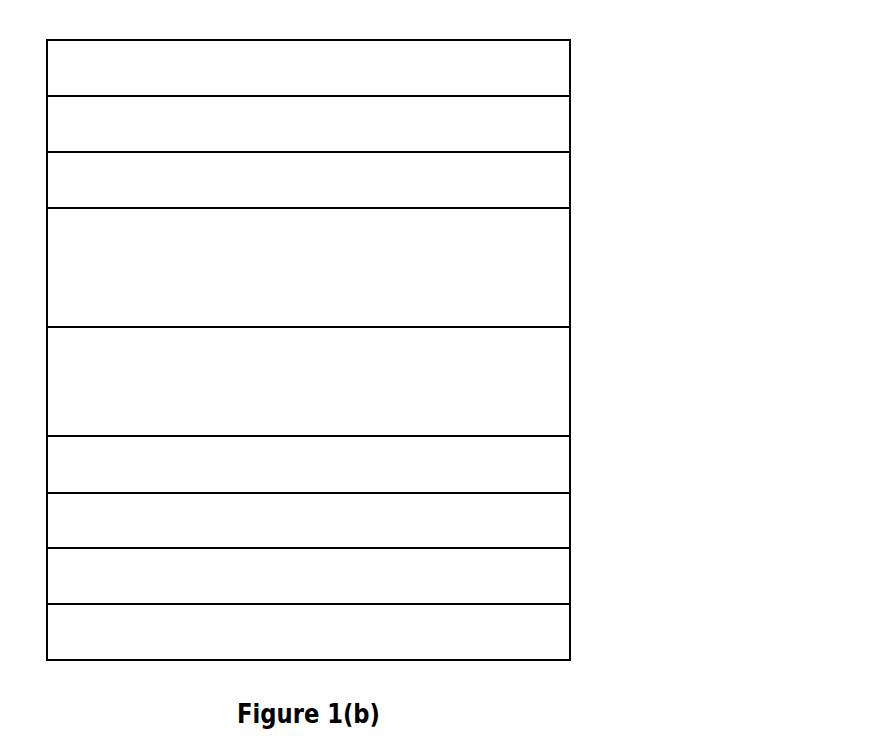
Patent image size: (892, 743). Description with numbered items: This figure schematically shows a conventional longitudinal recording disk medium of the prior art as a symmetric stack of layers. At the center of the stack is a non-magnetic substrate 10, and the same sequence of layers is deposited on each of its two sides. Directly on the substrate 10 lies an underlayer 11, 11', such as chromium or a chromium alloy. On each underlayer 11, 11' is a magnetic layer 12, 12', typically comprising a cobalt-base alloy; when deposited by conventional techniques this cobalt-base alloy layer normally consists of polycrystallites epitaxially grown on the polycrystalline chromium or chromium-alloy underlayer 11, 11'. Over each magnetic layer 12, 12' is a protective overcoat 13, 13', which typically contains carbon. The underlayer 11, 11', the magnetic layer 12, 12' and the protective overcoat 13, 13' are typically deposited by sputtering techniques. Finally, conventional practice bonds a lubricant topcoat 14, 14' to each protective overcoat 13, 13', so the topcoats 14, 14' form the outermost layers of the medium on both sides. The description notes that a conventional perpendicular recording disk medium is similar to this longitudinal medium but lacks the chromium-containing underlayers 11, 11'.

The lubricant topcoat 14 is at (402, 68).
The protective overcoat 13 is at (402, 124).
The magnetic layer 12 is at (402, 180).
The underlayer 11 is at (402, 267).
The non-magnetic substrate 10 is at (676, 403).
The underlayer 11' is at (406, 464).
The magnetic layer 12' is at (406, 520).
The protective overcoat 13' is at (406, 576).
The lubricant topcoat 14' is at (406, 632).